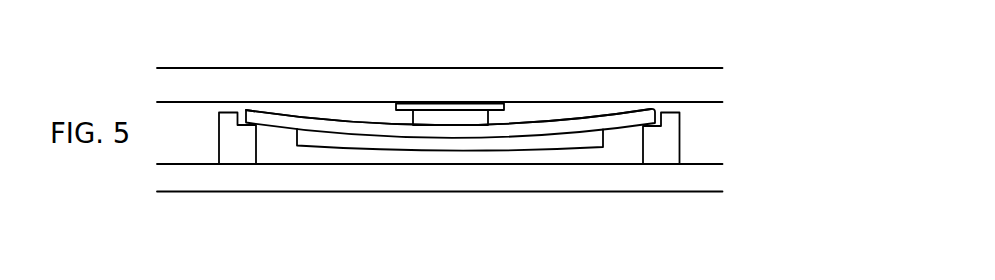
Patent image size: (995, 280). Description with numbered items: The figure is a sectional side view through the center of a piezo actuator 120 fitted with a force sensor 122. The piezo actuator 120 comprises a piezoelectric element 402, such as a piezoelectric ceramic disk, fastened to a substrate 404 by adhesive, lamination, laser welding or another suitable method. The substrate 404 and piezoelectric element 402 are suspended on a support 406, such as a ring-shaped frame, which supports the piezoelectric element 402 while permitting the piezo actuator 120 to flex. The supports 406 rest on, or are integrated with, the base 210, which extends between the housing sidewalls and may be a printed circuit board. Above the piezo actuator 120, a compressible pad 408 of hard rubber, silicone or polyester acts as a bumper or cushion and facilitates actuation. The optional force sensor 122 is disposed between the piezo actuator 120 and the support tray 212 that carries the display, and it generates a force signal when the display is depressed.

The piezo actuator 120 is at (504, 125).
The force sensor 122 is at (478, 107).
The base 210 is at (680, 177).
The support tray 212 is at (635, 75).
The piezoelectric element 402 is at (367, 143).
The substrate 404 is at (287, 117).
The support 406 is at (236, 153).
The pad 408 is at (422, 117).